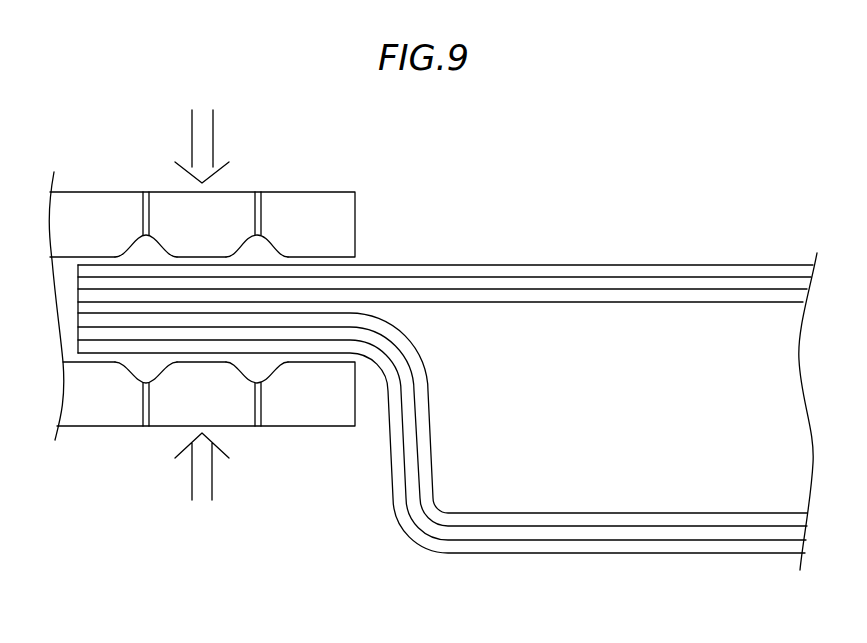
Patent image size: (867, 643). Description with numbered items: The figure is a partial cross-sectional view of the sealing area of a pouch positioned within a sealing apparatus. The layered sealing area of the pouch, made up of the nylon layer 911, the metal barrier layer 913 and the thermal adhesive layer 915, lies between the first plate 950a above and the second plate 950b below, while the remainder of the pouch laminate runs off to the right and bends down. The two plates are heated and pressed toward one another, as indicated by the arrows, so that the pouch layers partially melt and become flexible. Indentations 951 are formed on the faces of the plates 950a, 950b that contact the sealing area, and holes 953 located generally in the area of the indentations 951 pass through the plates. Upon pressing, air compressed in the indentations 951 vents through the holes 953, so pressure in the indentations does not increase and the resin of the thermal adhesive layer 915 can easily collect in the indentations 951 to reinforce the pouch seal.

The first plate 950a is at (311, 205).
The second plate 950b is at (305, 407).
The indentations 951 is at (244, 243).
The holes 953 is at (145, 426).
The nylon layer 911 is at (393, 270).
The metal barrier layer 913 is at (485, 285).
The thermal adhesive layer 915 is at (600, 295).